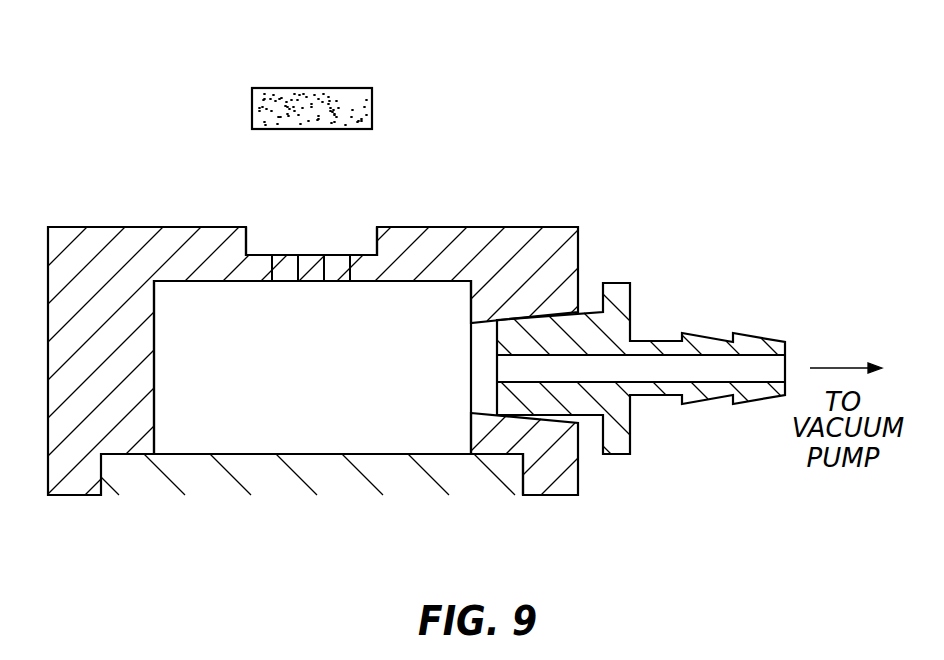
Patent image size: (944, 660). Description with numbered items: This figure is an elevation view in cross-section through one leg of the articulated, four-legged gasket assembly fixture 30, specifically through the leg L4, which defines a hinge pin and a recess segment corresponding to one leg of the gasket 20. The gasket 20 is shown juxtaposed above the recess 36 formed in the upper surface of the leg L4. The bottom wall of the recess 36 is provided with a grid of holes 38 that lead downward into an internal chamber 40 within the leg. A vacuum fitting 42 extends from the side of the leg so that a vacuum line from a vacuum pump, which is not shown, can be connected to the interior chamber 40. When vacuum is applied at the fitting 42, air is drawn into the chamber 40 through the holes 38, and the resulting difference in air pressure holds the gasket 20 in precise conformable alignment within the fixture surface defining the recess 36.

The gasket 20 is at (297, 113).
The gasket assembly fixture 30 is at (96, 508).
The recess 36 is at (258, 240).
The holes 38 is at (338, 282).
The internal chamber 40 is at (300, 399).
The vacuum fitting 42 is at (660, 341).
The leg L4 is at (92, 232).